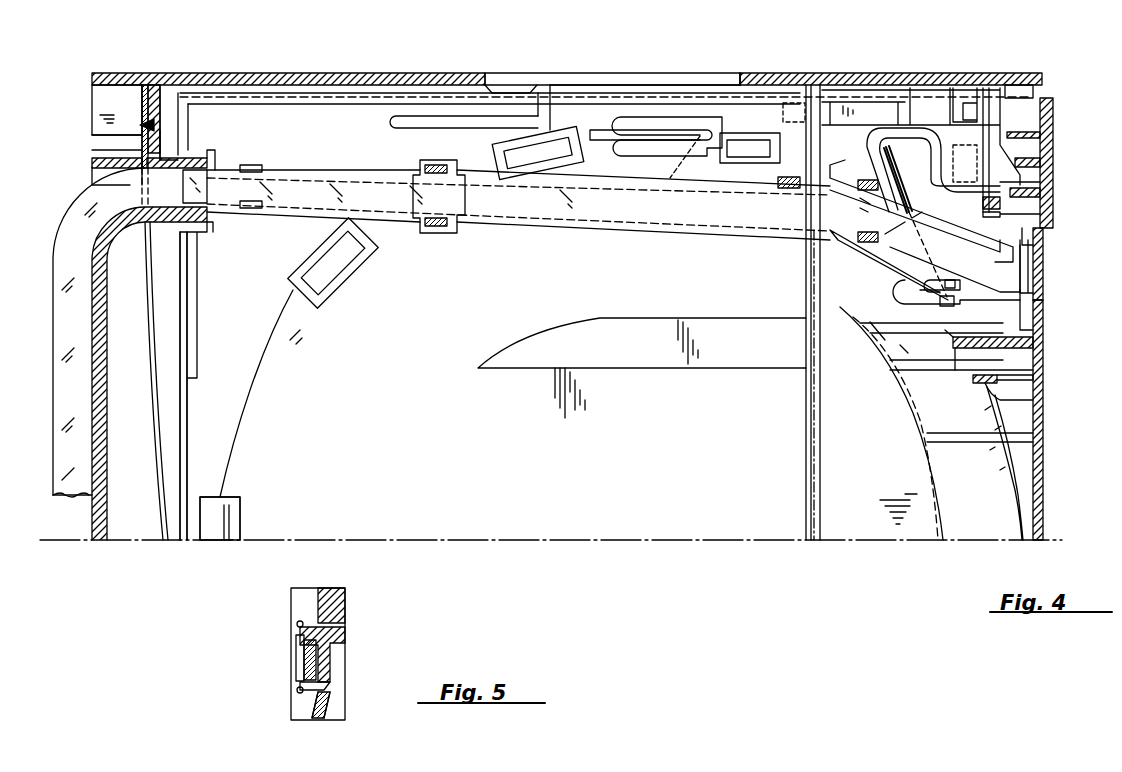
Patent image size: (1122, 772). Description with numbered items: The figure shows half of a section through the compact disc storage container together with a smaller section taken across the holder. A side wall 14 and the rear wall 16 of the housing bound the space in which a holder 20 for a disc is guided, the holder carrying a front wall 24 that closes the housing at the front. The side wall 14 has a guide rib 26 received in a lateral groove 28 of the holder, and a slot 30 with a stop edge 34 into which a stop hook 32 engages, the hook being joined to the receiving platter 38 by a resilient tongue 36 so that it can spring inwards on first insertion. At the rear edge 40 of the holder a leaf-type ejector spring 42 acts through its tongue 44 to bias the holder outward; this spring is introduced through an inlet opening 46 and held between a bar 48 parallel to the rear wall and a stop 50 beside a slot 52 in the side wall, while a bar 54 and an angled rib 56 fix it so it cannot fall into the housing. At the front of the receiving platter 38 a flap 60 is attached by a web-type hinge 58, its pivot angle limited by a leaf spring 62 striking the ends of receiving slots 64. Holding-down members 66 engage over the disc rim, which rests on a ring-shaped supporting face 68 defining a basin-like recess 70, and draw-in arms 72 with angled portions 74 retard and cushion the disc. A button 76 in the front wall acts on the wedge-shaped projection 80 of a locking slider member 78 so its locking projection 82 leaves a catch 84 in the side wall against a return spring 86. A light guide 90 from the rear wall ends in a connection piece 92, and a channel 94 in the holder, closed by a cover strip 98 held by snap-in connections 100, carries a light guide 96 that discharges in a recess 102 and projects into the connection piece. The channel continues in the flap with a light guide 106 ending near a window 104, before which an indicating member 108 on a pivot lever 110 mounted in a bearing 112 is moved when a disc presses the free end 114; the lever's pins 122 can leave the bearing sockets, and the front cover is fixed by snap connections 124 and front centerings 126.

In FIG. 4, the side wall 14 is at (333, 78).
In FIG. 4, the rear wall 16 is at (92, 540).
In FIG. 4, the holder 20 is at (398, 88).
In FIG. 4, the front wall 24 is at (1045, 448).
In FIG. 4, the guide rib 26 is at (560, 92).
In FIG. 4, the lateral groove 28 is at (285, 96).
In FIG. 4, the slot 30 is at (546, 88).
In FIG. 4, the stop hook 32 is at (515, 84).
In FIG. 4, the stop edge 34 is at (748, 78).
In FIG. 4, the resilient tongue 36 is at (446, 112).
In FIG. 4, the receiving platter 38 is at (261, 393).
In FIG. 5, the receiving platter 38 is at (345, 598).
In FIG. 4, the rear edge 40 is at (176, 482).
In FIG. 4, the ejector spring 42 is at (158, 124).
In FIG. 4, the tongue 44 is at (160, 464).
In FIG. 4, the inlet opening 46 is at (96, 108).
In FIG. 4, the bar 48 is at (158, 100).
In FIG. 4, the stop 50 is at (138, 90).
In FIG. 4, the slot 52 is at (146, 90).
In FIG. 4, the bar 54 is at (96, 165).
In FIG. 4, the rib 56 is at (160, 142).
In FIG. 4, the web-type hinge 58 is at (822, 445).
In FIG. 4, the flap 60 is at (888, 540).
In FIG. 4, the leaf spring 62 is at (866, 112).
In FIG. 4, the receiving slot 64 is at (790, 105).
In FIG. 4, the holding-down member 66 is at (540, 160).
In FIG. 5, the supporting face 68 is at (330, 688).
In FIG. 4, the recess 70 is at (512, 530).
In FIG. 5, the recess 70 is at (320, 712).
In FIG. 4, the draw-in arm 72 is at (640, 130).
In FIG. 4, the angled portion 74 is at (675, 178).
In FIG. 4, the button 76 is at (1040, 204).
In FIG. 4, the locking slider member 78 is at (1020, 122).
In FIG. 4, the wedge-shaped projection 80 is at (1040, 182).
In FIG. 4, the locking projection 82 is at (1012, 88).
In FIG. 4, the catch 84 is at (965, 92).
In FIG. 4, the return spring 86 is at (905, 216).
In FIG. 4, the light guide 90 is at (98, 488).
In FIG. 4, the connection piece 92 is at (200, 218).
In FIG. 4, the channel 94 is at (342, 176).
In FIG. 5, the channel 94 is at (332, 668).
In FIG. 4, the light guide 96 is at (397, 228).
In FIG. 5, the light guide 96 is at (300, 672).
In FIG. 4, the cover strip 98 is at (600, 225).
In FIG. 5, the cover strip 98 is at (294, 650).
In FIG. 4, the snap-in connection 100 is at (258, 165).
In FIG. 5, the snap-in connection 100 is at (296, 622).
In FIG. 4, the recess 102 is at (205, 236).
In FIG. 4, the window 104 is at (1045, 292).
In FIG. 4, the light guide 106 is at (846, 235).
In FIG. 4, the indicating member 108 is at (1038, 330).
In FIG. 4, the pivot lever 110 is at (980, 285).
In FIG. 4, the bearing 112 is at (950, 300).
In FIG. 4, the free end 114 is at (912, 292).
In FIG. 4, the pin 122 is at (945, 300).
In FIG. 4, the snap connection 124 is at (1038, 385).
In FIG. 4, the front centering 126 is at (950, 365).